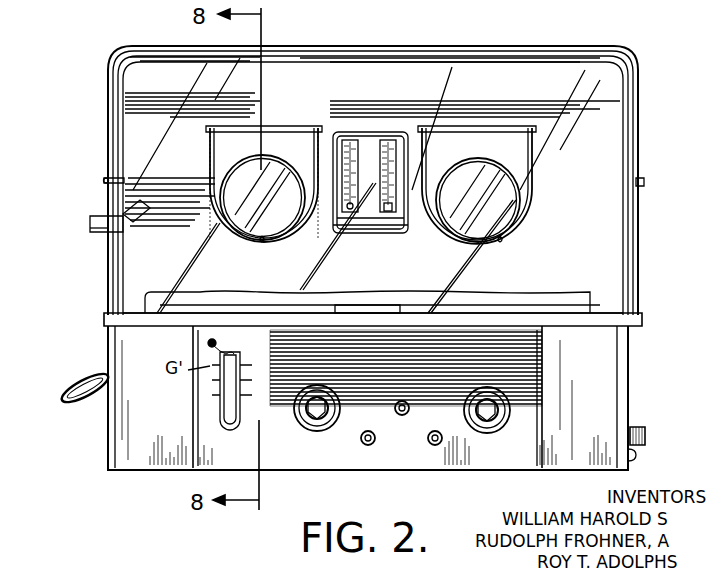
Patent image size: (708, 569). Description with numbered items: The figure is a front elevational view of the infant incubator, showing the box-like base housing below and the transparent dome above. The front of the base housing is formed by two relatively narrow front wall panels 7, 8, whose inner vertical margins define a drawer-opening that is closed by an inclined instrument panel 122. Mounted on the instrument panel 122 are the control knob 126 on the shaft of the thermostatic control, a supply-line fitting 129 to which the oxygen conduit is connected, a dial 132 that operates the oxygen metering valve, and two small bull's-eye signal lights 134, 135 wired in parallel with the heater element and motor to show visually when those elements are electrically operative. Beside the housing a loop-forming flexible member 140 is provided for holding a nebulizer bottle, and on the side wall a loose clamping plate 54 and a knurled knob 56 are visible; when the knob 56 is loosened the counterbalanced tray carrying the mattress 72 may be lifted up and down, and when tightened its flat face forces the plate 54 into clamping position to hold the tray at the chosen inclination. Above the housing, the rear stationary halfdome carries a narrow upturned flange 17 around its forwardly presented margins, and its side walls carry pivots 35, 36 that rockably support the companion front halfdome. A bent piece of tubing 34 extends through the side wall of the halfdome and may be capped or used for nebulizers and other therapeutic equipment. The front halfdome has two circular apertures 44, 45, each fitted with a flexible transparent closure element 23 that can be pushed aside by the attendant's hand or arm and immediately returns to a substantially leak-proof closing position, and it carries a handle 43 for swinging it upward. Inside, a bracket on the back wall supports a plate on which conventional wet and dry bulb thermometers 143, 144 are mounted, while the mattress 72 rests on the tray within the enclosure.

The upturned flange 17 is at (549, 50).
The closure element 23 is at (212, 150).
The circular aperture 44 is at (266, 235).
The circular aperture 45 is at (503, 233).
The dry bulb thermometer 144 is at (345, 130).
The wet bulb thermometer 143 is at (390, 135).
The pivot 35 is at (107, 165).
The tubing 34 is at (93, 232).
The pivot 36 is at (640, 182).
The mattress 72 is at (482, 300).
The handle 43 is at (381, 305).
The front wall panel 8 is at (603, 368).
The front wall panel 7 is at (140, 465).
The instrument panel 122 is at (339, 451).
The dial 132 is at (313, 418).
The control knob 126 is at (489, 420).
The supply-line fitting 129 is at (402, 416).
The bull's-eye signal light 134 is at (368, 446).
The bull's-eye signal light 135 is at (436, 446).
The knurled knob 56 is at (640, 428).
The clamping plate 54 is at (636, 455).
The loop-forming flexible member 140 is at (72, 376).